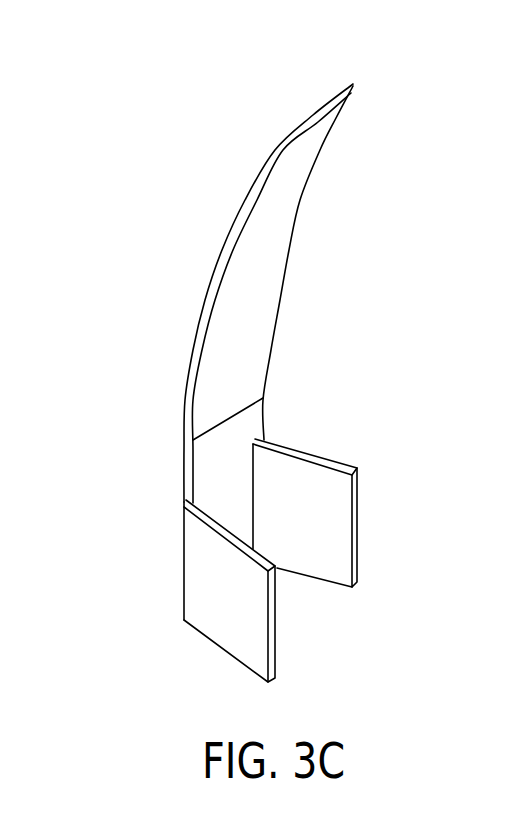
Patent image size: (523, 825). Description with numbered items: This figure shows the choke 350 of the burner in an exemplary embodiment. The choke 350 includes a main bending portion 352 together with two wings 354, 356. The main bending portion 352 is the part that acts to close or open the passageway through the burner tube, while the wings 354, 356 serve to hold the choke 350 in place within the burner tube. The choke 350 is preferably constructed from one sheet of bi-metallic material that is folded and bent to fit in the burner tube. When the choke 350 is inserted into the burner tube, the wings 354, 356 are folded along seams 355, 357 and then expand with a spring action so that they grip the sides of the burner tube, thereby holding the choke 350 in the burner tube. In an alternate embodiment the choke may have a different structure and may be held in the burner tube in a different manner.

The choke 350 is at (265, 118).
The main bending portion 352 is at (210, 277).
The wing 354 is at (217, 617).
The seam 355 is at (182, 563).
The wing 356 is at (318, 560).
The seam 357 is at (255, 492).